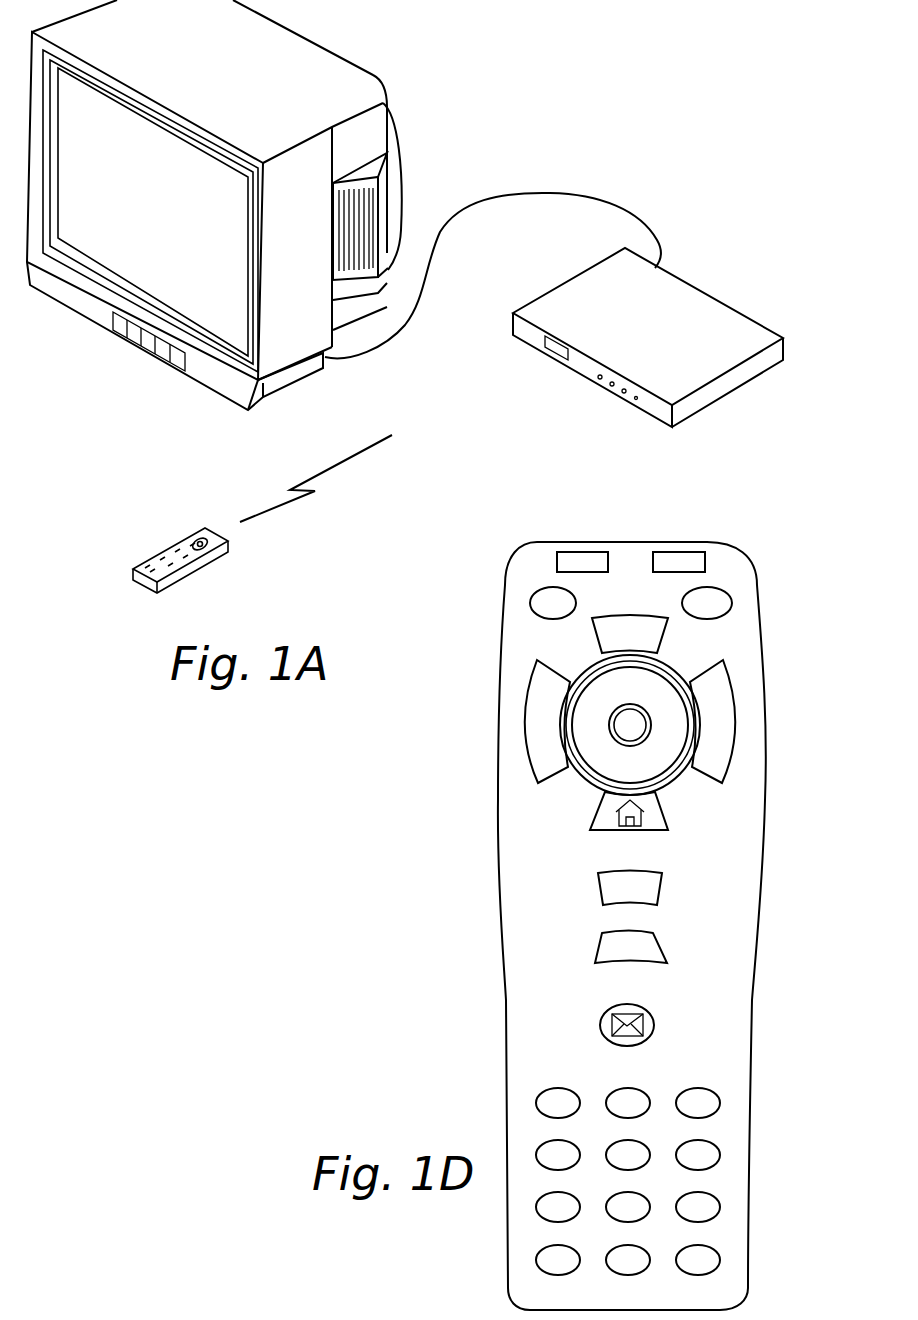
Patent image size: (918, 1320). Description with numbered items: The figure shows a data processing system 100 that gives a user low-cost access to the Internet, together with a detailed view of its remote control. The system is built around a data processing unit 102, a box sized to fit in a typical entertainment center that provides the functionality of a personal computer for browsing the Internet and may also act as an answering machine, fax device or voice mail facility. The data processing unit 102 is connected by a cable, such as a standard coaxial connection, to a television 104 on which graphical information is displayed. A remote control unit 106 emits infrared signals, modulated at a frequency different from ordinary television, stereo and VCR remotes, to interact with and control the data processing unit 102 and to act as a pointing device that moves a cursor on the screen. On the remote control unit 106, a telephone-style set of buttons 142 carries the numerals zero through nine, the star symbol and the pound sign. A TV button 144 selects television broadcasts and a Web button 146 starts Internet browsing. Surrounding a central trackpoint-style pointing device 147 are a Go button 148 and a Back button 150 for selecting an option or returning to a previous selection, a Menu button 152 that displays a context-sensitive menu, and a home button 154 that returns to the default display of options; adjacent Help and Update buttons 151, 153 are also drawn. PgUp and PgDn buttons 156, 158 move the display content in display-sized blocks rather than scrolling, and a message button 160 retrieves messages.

In FIG. 1A, the data processing system 100 is at (513, 446).
In FIG. 1A, the data processing unit 102 is at (718, 297).
In FIG. 1A, the television 104 is at (366, 71).
In FIG. 1A, the remote control unit 106 is at (158, 557).
In FIG. 1D, the remote control unit 106 is at (753, 1055).
In FIG. 1D, the buttons 142 is at (758, 1080).
In FIG. 1D, the TV button 144 is at (582, 552).
In FIG. 1D, the Web button 146 is at (678, 552).
In FIG. 1D, the center select button 147 is at (637, 723).
In FIG. 1D, the Go button 148 is at (706, 798).
In FIG. 1D, the Back button 150 is at (555, 798).
In FIG. 1D, the Help button 151 is at (530, 603).
In FIG. 1D, the Menu button 152 is at (638, 615).
In FIG. 1D, the Update button 153 is at (733, 608).
In FIG. 1D, the home button 154 is at (655, 830).
In FIG. 1D, the PgUp button 156 is at (660, 888).
In FIG. 1D, the PgDn button 158 is at (650, 967).
In FIG. 1D, the message button 160 is at (657, 1025).